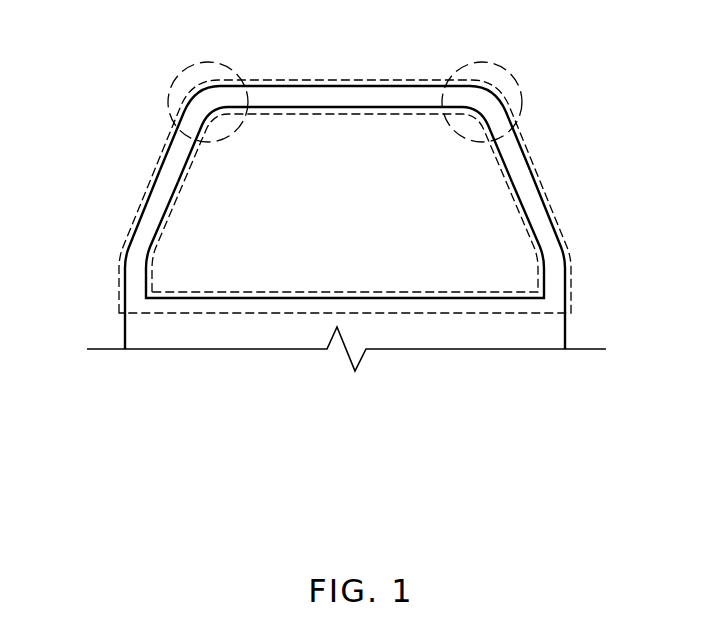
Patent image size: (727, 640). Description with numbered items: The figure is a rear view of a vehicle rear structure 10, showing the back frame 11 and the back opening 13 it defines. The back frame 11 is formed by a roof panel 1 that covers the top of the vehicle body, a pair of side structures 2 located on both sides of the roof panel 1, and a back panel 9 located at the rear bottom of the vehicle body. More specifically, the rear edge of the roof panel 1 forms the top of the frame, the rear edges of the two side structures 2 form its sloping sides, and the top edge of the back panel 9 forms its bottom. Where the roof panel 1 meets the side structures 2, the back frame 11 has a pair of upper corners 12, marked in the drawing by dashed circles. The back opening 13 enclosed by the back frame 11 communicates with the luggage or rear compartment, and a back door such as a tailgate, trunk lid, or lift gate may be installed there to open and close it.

The roof panel 1 is at (339, 92).
The side structures 2 is at (156, 196).
The back panel 9 is at (444, 333).
The vehicle rear structure 10 is at (42, 65).
The back frame 11 is at (543, 180).
The upper corners 12 is at (178, 75).
The back opening 13 is at (338, 218).